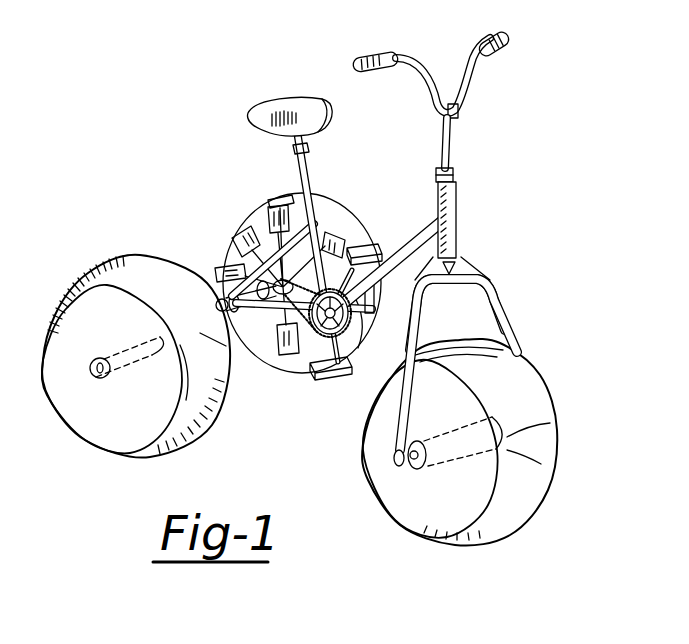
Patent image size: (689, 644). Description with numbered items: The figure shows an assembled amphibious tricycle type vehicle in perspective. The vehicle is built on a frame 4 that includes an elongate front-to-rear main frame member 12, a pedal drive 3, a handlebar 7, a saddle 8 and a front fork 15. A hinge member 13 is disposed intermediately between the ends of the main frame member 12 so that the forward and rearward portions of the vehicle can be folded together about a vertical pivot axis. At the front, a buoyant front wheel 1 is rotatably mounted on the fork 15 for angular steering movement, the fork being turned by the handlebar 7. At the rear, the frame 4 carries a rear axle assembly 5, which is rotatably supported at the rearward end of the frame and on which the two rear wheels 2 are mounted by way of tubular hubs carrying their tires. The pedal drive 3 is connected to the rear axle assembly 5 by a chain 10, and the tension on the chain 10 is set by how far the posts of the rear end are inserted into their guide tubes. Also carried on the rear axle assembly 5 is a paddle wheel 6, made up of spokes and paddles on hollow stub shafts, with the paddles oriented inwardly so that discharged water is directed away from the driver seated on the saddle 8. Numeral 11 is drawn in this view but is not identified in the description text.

The buoyant front wheel 1 is at (510, 438).
The rear wheels 2 is at (353, 226).
The pedal drive 3 is at (300, 373).
The frame 4 is at (320, 168).
The rear axle assembly 5 is at (217, 300).
The paddle wheel 6 is at (233, 237).
The handlebar 7 is at (476, 94).
The saddle 8 is at (294, 102).
The chain 10 is at (278, 357).
The paddle wheel 11 is at (251, 348).
The main frame member 12 is at (418, 227).
The hinge member 13 is at (360, 368).
The front fork 15 is at (457, 314).